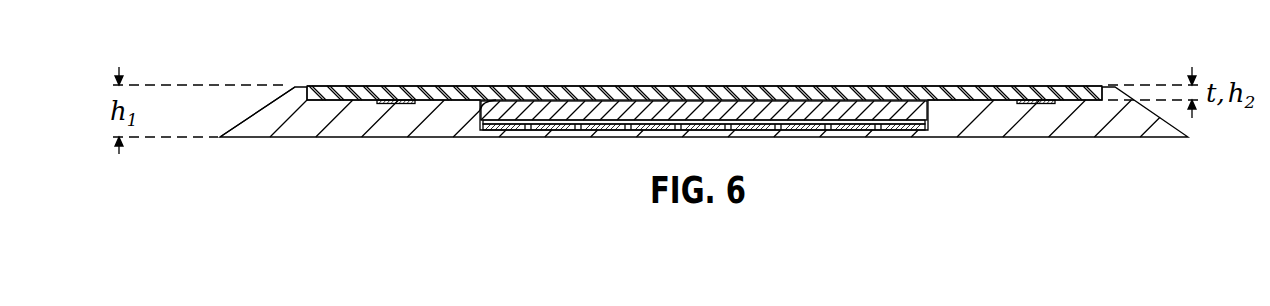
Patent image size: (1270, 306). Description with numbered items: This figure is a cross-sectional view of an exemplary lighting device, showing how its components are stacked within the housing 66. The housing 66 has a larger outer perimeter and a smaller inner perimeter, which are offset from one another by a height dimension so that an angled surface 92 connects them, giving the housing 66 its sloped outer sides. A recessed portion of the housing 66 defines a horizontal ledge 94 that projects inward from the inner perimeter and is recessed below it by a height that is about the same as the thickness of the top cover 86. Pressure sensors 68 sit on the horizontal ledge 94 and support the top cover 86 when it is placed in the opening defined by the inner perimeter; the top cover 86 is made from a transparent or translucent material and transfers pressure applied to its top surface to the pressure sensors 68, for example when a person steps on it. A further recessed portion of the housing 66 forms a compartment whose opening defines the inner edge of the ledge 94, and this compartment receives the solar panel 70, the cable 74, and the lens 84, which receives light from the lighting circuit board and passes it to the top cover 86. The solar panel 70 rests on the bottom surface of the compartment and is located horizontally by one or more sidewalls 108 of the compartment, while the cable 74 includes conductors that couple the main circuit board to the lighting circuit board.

The housing 66 is at (282, 138).
The pressure sensor 68 is at (405, 104).
The solar panel 70 is at (905, 131).
The cable 74 is at (507, 131).
The lens 84 is at (903, 108).
The top cover 86 is at (988, 87).
The angled surface 92 is at (258, 110).
The horizontal ledge 94 is at (437, 99).
The sidewall 108 is at (495, 99).